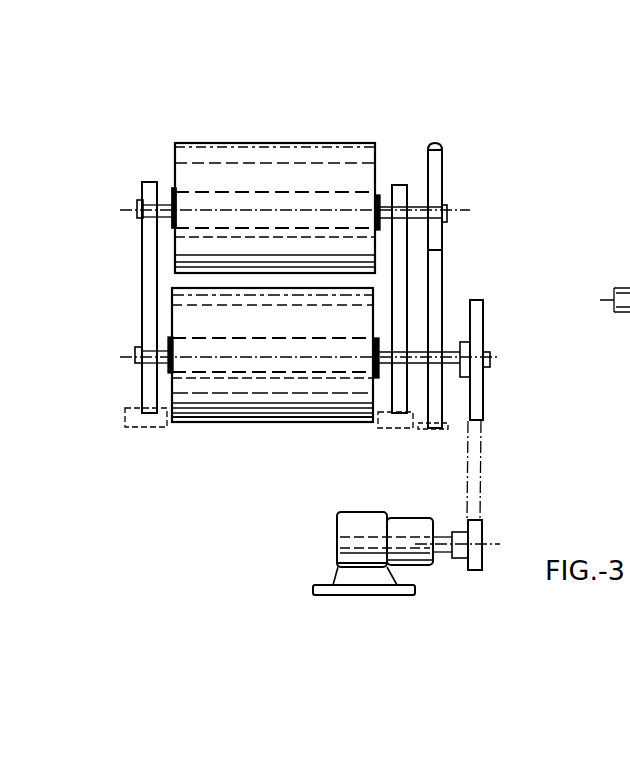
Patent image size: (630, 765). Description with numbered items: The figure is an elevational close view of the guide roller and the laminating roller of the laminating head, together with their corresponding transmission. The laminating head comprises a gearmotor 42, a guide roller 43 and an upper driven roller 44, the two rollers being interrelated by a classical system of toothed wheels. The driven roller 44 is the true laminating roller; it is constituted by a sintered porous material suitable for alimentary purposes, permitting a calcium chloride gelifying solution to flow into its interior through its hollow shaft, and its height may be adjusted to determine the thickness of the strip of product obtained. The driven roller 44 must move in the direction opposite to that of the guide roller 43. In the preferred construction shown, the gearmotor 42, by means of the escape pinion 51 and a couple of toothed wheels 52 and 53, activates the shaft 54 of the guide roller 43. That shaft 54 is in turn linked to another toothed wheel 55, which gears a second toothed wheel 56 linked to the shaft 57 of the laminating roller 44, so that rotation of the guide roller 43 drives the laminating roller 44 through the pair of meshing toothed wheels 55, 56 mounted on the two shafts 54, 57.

The gearmotor 42 is at (335, 577).
The guide roller 43 is at (268, 422).
The driven roller 44 is at (308, 153).
The escape pinion 51 is at (472, 538).
The toothed wheel 52 is at (475, 463).
The toothed wheel 53 is at (472, 392).
The shaft of guide roller 54 is at (197, 338).
The toothed wheel 55 is at (435, 310).
The second toothed wheel 56 is at (435, 245).
The shaft of the laminating roller 57 is at (190, 192).